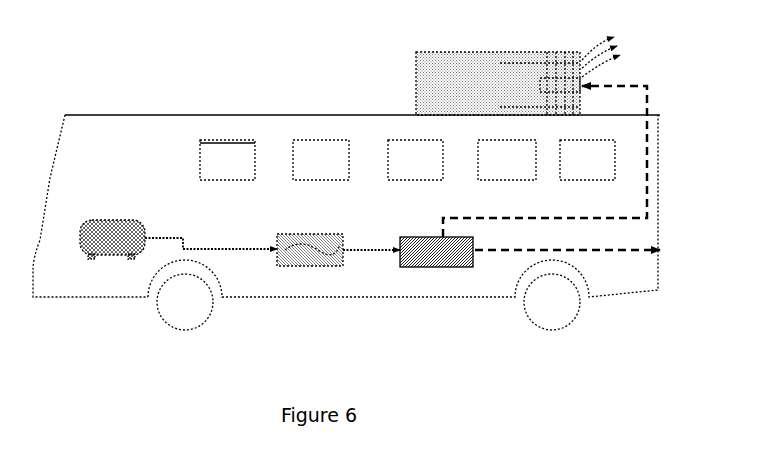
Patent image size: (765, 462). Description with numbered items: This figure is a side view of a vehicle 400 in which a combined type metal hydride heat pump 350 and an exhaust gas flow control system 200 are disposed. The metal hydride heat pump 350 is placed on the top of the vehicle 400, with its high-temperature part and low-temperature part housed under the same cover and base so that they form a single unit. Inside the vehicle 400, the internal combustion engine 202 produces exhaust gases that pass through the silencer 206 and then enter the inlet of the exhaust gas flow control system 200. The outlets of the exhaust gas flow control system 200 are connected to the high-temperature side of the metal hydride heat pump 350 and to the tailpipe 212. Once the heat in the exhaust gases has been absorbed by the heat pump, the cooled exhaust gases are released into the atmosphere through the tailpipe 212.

The vehicle 400 is at (161, 110).
The combined type metal hydride heat pump 350 is at (412, 66).
The internal combustion engine 202 is at (110, 259).
The silencer 206 is at (314, 268).
The exhaust gas flow control system 200 is at (441, 269).
The tailpipe 212 is at (630, 262).